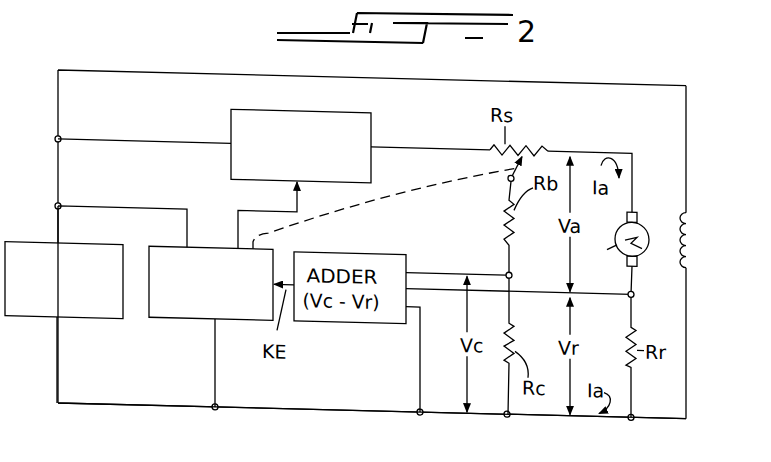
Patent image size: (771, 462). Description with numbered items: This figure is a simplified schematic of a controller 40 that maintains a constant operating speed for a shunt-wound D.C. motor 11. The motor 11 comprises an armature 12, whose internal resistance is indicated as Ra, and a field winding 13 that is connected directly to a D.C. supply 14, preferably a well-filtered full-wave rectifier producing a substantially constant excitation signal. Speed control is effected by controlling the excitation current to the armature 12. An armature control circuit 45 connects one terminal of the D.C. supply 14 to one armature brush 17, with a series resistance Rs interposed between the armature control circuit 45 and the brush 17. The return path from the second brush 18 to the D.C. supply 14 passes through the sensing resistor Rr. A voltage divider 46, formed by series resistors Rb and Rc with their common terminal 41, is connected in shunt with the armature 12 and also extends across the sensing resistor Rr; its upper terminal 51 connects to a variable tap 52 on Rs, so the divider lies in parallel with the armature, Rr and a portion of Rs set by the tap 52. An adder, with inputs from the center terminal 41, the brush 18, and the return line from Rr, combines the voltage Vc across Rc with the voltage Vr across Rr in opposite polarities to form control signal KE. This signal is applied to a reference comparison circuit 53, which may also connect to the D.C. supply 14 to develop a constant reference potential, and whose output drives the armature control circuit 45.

The shunt-wound D.C. motor 11 is at (659, 236).
The armature 12 is at (626, 247).
The field winding 13 is at (688, 220).
The D.C. supply 14 is at (35, 318).
The armature brush 17 is at (639, 198).
The armature brush 18 is at (638, 251).
The controller 40 is at (339, 374).
The common terminal 41 is at (507, 262).
The armature control circuit 45 is at (313, 105).
The voltage divider 46 is at (525, 267).
The upper terminal 51 is at (507, 170).
The tap 52 is at (518, 150).
The reference comparison circuit 53 is at (175, 316).